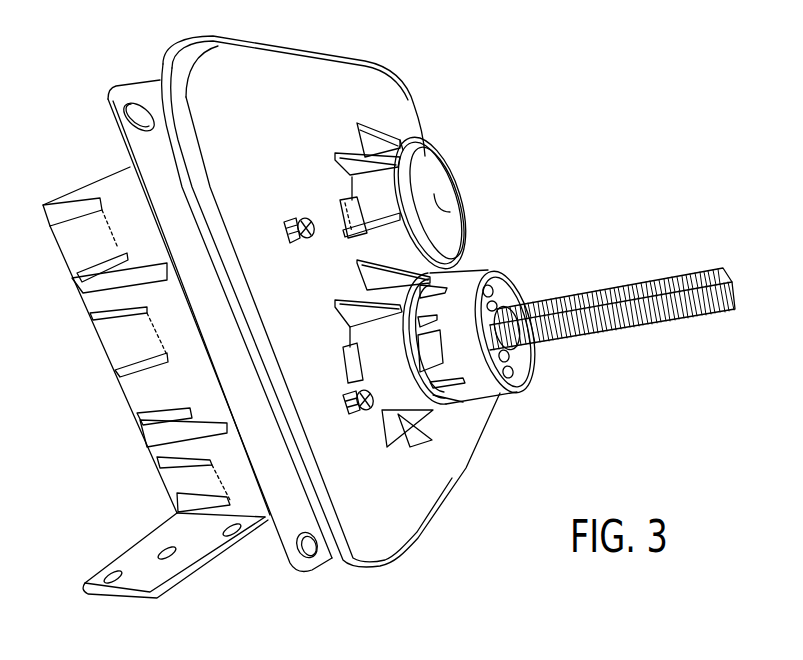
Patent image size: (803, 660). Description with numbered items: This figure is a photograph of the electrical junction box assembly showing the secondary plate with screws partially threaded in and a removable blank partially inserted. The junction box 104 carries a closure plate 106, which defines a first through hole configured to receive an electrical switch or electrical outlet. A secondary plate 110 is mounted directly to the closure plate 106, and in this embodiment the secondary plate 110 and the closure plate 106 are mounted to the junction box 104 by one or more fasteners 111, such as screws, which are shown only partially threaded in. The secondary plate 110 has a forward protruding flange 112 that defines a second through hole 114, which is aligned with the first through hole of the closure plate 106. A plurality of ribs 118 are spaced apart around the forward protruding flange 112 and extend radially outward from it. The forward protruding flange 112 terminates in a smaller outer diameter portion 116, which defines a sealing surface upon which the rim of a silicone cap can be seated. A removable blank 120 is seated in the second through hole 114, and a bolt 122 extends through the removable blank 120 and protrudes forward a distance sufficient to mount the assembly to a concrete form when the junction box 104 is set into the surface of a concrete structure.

The junction box 104 is at (100, 185).
The closure plate 106 is at (163, 70).
The secondary plate 110 is at (213, 70).
The fastener 111 is at (365, 412).
The forward protruding flange 112 is at (377, 355).
The second through hole 114 is at (455, 209).
The smaller outer diameter portion 116 is at (395, 140).
The ribs 118 is at (350, 167).
The removable blank 120 is at (482, 383).
The bolt 122 is at (623, 322).